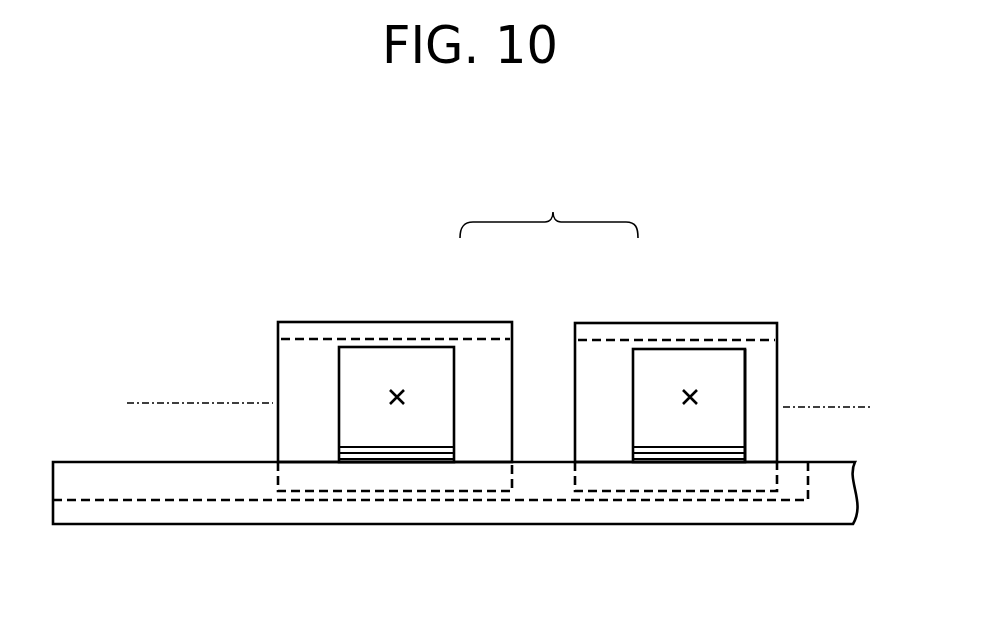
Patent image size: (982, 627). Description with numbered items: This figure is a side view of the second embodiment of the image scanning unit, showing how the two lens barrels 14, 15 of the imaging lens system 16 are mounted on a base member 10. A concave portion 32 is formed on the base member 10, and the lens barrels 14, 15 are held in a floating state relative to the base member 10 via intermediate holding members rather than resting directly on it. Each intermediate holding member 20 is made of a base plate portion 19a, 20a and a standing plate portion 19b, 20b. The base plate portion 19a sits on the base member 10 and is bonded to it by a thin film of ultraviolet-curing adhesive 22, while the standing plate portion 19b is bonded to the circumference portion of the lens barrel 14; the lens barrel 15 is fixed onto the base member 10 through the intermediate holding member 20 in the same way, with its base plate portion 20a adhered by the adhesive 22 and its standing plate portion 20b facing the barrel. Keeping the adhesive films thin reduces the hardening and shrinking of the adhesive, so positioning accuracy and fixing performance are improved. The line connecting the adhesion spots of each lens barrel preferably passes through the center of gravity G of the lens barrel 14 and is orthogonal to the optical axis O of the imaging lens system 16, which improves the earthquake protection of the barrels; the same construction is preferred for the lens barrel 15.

The base member 10 is at (560, 525).
The concave portion 32 is at (97, 498).
The optical axis O is at (203, 402).
The imaging lens system 16 is at (549, 208).
The lens barrel 14 is at (420, 322).
The lens barrel 15 is at (672, 323).
The base plate portion 19a is at (430, 447).
The standing plate portion 19b is at (368, 357).
The intermediate holding member 20 is at (770, 373).
The base plate portion 20a is at (725, 447).
The standing plate portion 20b is at (708, 360).
The ultraviolet-curing adhesive 22 is at (397, 460).
The center of gravity G is at (392, 397).